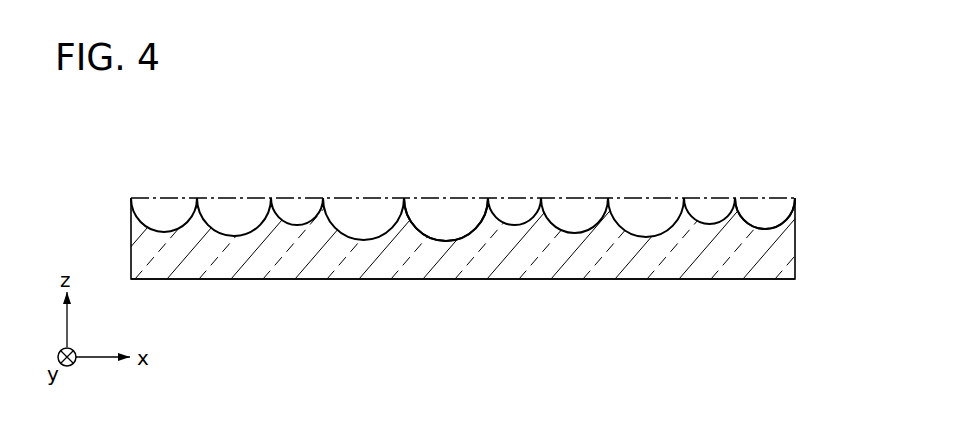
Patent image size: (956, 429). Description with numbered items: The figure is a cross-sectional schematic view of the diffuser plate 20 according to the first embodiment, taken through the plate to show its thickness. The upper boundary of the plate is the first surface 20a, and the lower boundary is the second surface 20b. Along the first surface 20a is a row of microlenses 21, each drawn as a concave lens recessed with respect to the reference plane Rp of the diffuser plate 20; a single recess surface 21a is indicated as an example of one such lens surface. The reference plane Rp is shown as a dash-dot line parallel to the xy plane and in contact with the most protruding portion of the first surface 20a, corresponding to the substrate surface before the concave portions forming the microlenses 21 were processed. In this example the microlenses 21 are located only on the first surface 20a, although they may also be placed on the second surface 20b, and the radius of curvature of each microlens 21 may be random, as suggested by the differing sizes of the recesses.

The diffuser plate 20 is at (621, 271).
The first surface 20a is at (750, 207).
The second surface 20b is at (741, 279).
The microlens 21 is at (437, 193).
The curved surface of recess 21a is at (475, 227).
The reference plane Rp is at (143, 197).